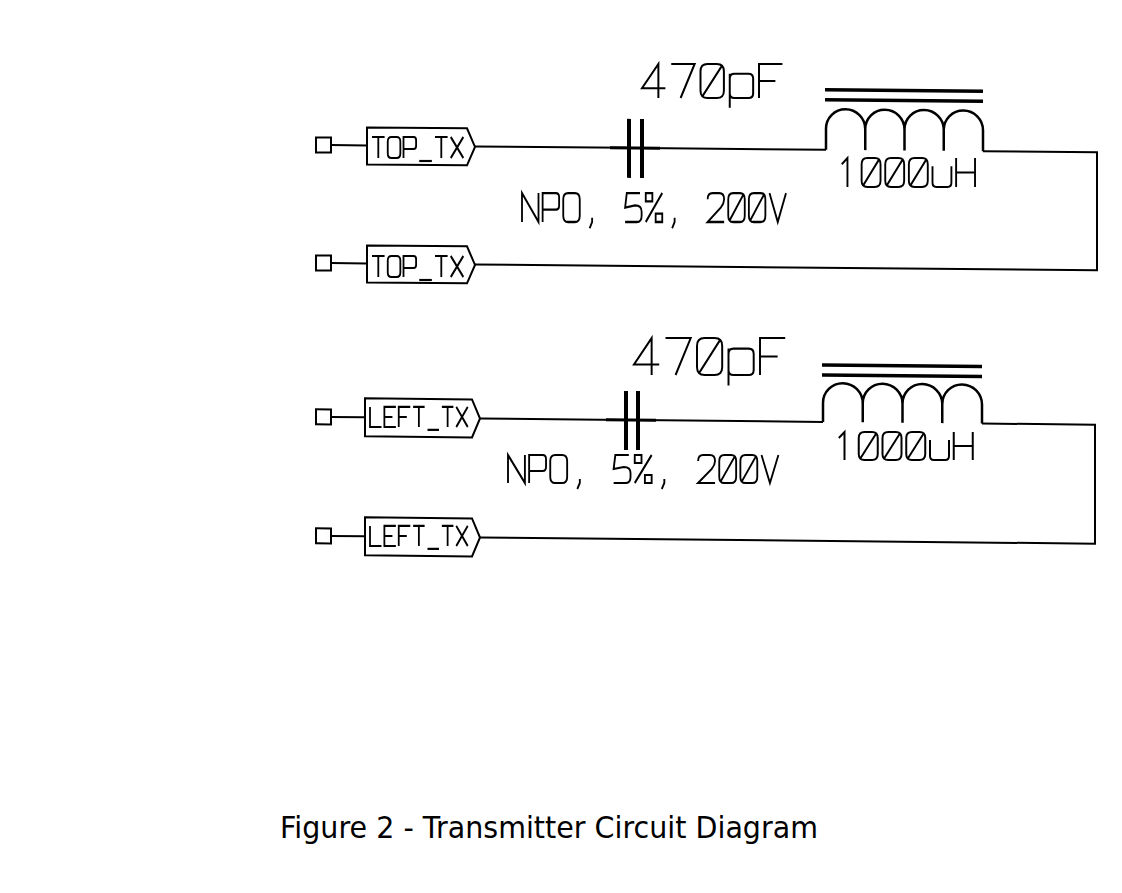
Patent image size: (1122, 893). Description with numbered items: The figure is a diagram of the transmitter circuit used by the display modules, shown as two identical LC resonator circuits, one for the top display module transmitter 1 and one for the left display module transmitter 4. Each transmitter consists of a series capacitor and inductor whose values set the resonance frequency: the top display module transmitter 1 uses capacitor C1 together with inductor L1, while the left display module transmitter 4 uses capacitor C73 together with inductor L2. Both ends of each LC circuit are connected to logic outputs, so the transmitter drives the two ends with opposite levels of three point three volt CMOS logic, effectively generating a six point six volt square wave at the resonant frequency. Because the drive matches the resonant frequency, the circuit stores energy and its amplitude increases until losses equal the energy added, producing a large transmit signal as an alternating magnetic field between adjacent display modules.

The top display module transmitter 1 is at (598, 166).
The left display module transmitter 4 is at (595, 440).
The capacitor C1, 470pF NPO 5% 200V C1 is at (654, 146).
The inductor L1, 1000uH L1 is at (904, 115).
The capacitor C73, 470pF NPO 5% 200V C73 is at (646, 413).
The inductor L2, 1000uH L2 is at (902, 389).